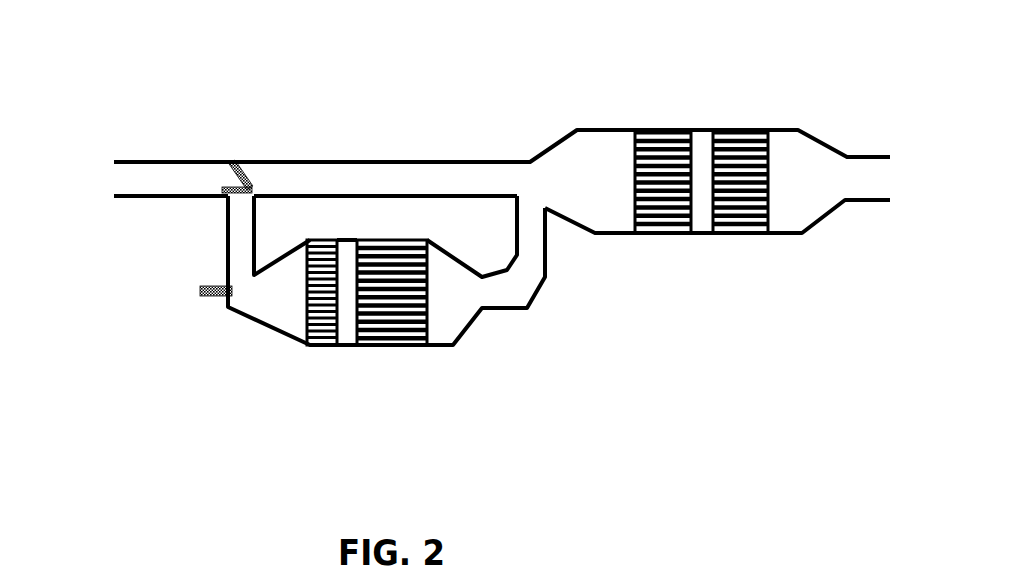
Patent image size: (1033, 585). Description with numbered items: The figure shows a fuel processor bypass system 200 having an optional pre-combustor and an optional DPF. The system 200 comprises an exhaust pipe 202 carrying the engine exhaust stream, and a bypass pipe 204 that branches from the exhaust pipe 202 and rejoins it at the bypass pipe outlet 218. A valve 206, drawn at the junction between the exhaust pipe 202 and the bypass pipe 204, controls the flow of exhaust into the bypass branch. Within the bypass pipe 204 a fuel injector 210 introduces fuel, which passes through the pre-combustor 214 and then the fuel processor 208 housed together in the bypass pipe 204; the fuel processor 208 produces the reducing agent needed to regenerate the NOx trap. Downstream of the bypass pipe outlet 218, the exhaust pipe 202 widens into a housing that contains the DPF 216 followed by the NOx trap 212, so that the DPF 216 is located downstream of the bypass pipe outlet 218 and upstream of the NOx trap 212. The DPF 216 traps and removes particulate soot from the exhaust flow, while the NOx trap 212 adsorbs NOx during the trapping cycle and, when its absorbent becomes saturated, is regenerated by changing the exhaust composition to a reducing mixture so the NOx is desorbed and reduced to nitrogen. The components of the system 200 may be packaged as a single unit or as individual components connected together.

The system 200 is at (372, 62).
The exhaust pipe 202 is at (403, 162).
The bypass pipe 204 is at (225, 240).
The valve 206 is at (232, 162).
The fuel processor 208 is at (392, 345).
The fuel injector 210 is at (207, 295).
The NOx trap 212 is at (743, 167).
The pre-combustor 214 is at (324, 345).
The DPF 216 is at (667, 165).
The bypass pipe outlet 218 is at (533, 207).